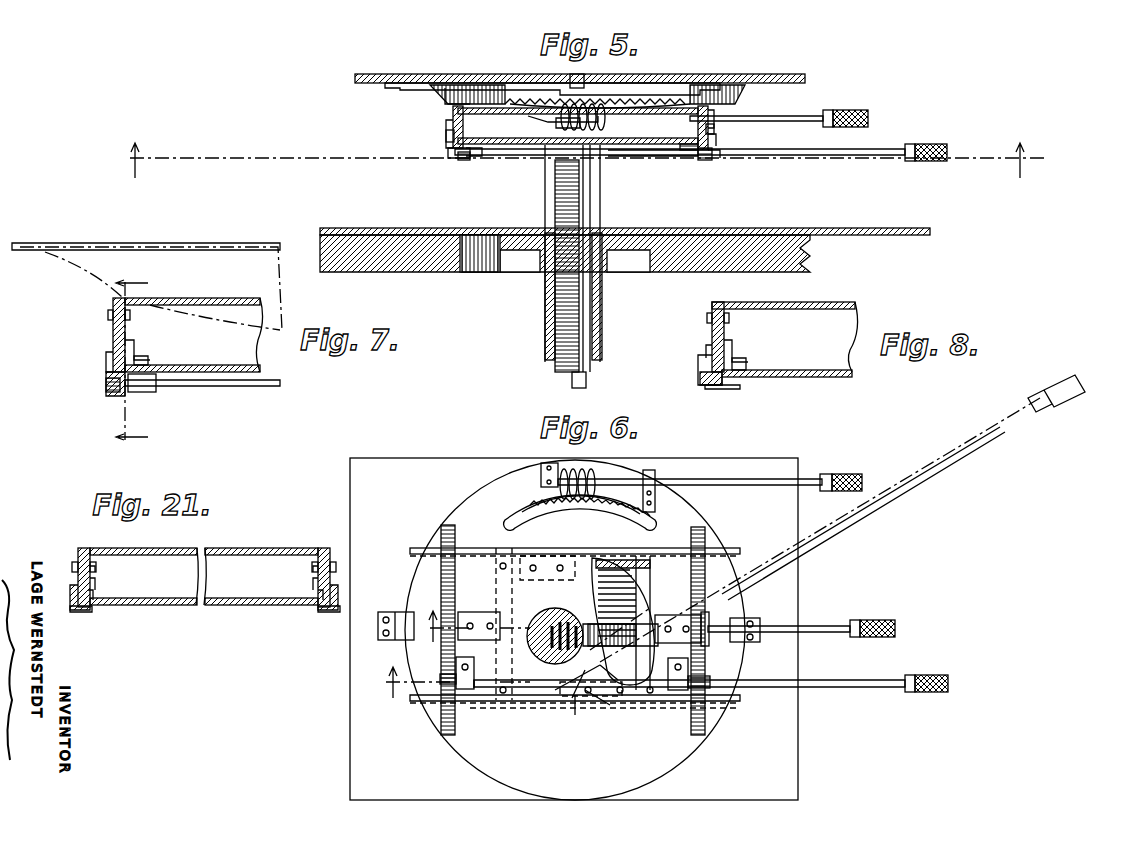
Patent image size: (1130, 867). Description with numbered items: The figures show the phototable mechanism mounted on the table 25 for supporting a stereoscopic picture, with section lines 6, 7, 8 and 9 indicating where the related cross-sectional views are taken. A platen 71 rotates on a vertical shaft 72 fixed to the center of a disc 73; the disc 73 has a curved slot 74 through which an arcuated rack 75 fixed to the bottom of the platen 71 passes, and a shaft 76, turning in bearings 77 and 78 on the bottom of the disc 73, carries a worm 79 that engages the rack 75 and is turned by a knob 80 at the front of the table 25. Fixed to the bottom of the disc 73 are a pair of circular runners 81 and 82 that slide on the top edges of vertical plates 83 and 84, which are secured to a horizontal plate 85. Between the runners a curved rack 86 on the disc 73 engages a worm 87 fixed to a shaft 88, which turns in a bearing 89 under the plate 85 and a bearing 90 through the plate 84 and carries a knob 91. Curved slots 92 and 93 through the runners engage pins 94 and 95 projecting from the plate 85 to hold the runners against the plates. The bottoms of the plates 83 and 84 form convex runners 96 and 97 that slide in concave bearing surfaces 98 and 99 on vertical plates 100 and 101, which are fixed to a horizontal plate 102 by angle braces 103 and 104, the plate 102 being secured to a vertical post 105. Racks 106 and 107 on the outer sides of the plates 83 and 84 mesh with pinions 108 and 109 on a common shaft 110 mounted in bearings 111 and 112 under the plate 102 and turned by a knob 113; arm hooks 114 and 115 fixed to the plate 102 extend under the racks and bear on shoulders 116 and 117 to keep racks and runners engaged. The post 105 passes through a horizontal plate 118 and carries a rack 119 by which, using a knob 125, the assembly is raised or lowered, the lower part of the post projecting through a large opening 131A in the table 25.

In FIG. 5, the section line 6- 6 is at (583, 160).
In FIG. 6, the section line 7- 7 is at (458, 678).
In FIG. 6, the section line 8- 8 is at (477, 622).
In FIG. 7, the section line 9- 9 is at (132, 361).
In FIG. 5, the table 25 is at (366, 273).
In FIG. 5, the platen 71 is at (372, 75).
In FIG. 7, the platen 71 is at (40, 248).
In FIG. 6, the platen 71 is at (383, 470).
In FIG. 5, the vertical shaft 72 is at (590, 83).
In FIG. 5, the disc 73 is at (422, 83).
In FIG. 6, the disc 73 is at (460, 512).
In FIG. 6, the curved slot 74 is at (642, 518).
In FIG. 6, the arcuated rack 75 is at (577, 500).
In FIG. 6, the shaft 76 is at (740, 486).
In FIG. 6, the bearing 77 is at (541, 481).
In FIG. 6, the bearing 78 is at (650, 478).
In FIG. 6, the worm 79 is at (588, 472).
In FIG. 6, the knob 80 is at (841, 478).
In FIG. 6, the circular runner 81 is at (414, 553).
In FIG. 5, the circular runner 82 is at (440, 95).
In FIG. 7, the circular runner 82 is at (72, 266).
In FIG. 6, the circular runner 82 is at (418, 702).
In FIG. 5, the vertical plate 83 is at (465, 122).
In FIG. 7, the vertical plate 83 is at (131, 320).
In FIG. 8, the vertical plate 83 is at (728, 322).
In FIG. 21, the vertical plate 83 is at (89, 548).
In FIG. 5, the vertical plate 84 is at (696, 118).
In FIG. 21, the vertical plate 84 is at (322, 548).
In FIG. 5, the horizontal plate 85 is at (665, 112).
In FIG. 7, the horizontal plate 85 is at (212, 300).
In FIG. 8, the horizontal plate 85 is at (808, 305).
In FIG. 21, the horizontal plate 85 is at (240, 550).
In FIG. 5, the rack 86 is at (532, 96).
In FIG. 6, the rack 86 is at (622, 626).
In FIG. 5, the worm 87 is at (615, 120).
In FIG. 6, the worm 87 is at (580, 618).
In FIG. 5, the shaft 88 is at (780, 120).
In FIG. 6, the shaft 88 is at (818, 630).
In FIG. 5, the bearing 89 is at (560, 126).
In FIG. 5, the bearing 90 is at (705, 118).
In FIG. 5, the knob 91 is at (868, 118).
In FIG. 6, the knob 91 is at (888, 634).
In FIG. 5, the curved slot 92 is at (545, 120).
In FIG. 6, the curved slot 92 is at (608, 562).
In FIG. 6, the curved slot 93 is at (524, 706).
In FIG. 6, the pin 94 is at (568, 556).
In FIG. 6, the pin 95 is at (575, 706).
In FIG. 5, the circular convex runner 96 is at (450, 100).
In FIG. 7, the circular convex runner 96 is at (136, 341).
In FIG. 8, the circular convex runner 96 is at (729, 342).
In FIG. 21, the circular convex runner 96 is at (96, 569).
In FIG. 5, the circular convex runner 97 is at (712, 128).
In FIG. 21, the circular convex runner 97 is at (315, 572).
In FIG. 21, the concave bearing surface 98 is at (94, 584).
In FIG. 21, the concave bearing surface 99 is at (319, 584).
In FIG. 5, the vertical plate 100 is at (452, 140).
In FIG. 7, the vertical plate 100 is at (115, 340).
In FIG. 8, the vertical plate 100 is at (712, 348).
In FIG. 21, the vertical plate 100 is at (92, 602).
In FIG. 5, the vertical plate 101 is at (712, 138).
In FIG. 21, the vertical plate 101 is at (318, 604).
In FIG. 5, the horizontal plate 102 is at (498, 146).
In FIG. 7, the horizontal plate 102 is at (228, 364).
In FIG. 8, the horizontal plate 102 is at (818, 379).
In FIG. 21, the horizontal plate 102 is at (232, 607).
In FIG. 7, the angle brace 103 is at (150, 362).
In FIG. 8, the angle brace 103 is at (748, 368).
In FIG. 5, the angle brace 104 is at (693, 146).
In FIG. 5, the vertical post 105 is at (602, 198).
In FIG. 6, the vertical post 105 is at (556, 610).
In FIG. 5, the rack 106 is at (455, 152).
In FIG. 7, the rack 106 is at (110, 373).
In FIG. 8, the rack 106 is at (705, 387).
In FIG. 21, the rack 106 is at (78, 609).
In FIG. 6, the rack 106 is at (443, 574).
In FIG. 21, the rack 107 is at (331, 611).
In FIG. 6, the rack 107 is at (708, 548).
In FIG. 5, the pinion 108 is at (466, 157).
In FIG. 7, the pinion 108 is at (108, 392).
In FIG. 6, the pinion 108 is at (443, 680).
In FIG. 5, the pinion 109 is at (704, 160).
In FIG. 6, the pinion 109 is at (707, 683).
In FIG. 5, the shaft 110 is at (810, 153).
In FIG. 7, the shaft 110 is at (226, 386).
In FIG. 6, the shaft 110 is at (838, 686).
In FIG. 5, the bearing 111 is at (472, 160).
In FIG. 7, the bearing 111 is at (143, 392).
In FIG. 6, the bearing 111 is at (476, 673).
In FIG. 5, the bearing 112 is at (676, 156).
In FIG. 6, the bearing 112 is at (668, 663).
In FIG. 5, the knob 113 is at (945, 144).
In FIG. 6, the knob 113 is at (950, 690).
In FIG. 8, the arm hook 114 is at (712, 388).
In FIG. 6, the arm hook 114 is at (478, 621).
In FIG. 6, the arm hook 115 is at (670, 624).
In FIG. 5, the shoulder 116 is at (448, 130).
In FIG. 8, the shoulder 116 is at (698, 369).
In FIG. 21, the shoulder 116 is at (75, 585).
In FIG. 5, the shoulder 117 is at (720, 134).
In FIG. 21, the shoulder 117 is at (338, 592).
In FIG. 5, the horizontal plate 118 is at (834, 230).
In FIG. 5, the rack 119 is at (548, 208).
In FIG. 6, the knob 125 is at (1056, 385).
In FIG. 5, the opening 131A is at (488, 262).